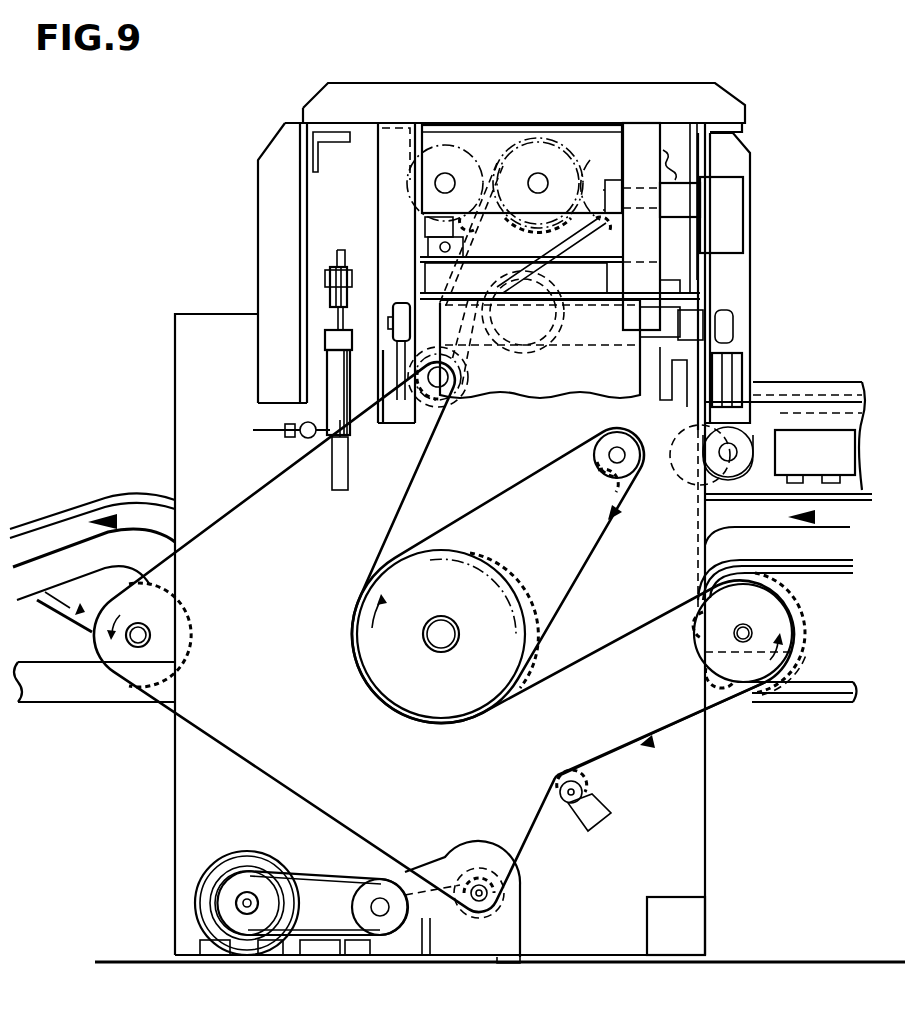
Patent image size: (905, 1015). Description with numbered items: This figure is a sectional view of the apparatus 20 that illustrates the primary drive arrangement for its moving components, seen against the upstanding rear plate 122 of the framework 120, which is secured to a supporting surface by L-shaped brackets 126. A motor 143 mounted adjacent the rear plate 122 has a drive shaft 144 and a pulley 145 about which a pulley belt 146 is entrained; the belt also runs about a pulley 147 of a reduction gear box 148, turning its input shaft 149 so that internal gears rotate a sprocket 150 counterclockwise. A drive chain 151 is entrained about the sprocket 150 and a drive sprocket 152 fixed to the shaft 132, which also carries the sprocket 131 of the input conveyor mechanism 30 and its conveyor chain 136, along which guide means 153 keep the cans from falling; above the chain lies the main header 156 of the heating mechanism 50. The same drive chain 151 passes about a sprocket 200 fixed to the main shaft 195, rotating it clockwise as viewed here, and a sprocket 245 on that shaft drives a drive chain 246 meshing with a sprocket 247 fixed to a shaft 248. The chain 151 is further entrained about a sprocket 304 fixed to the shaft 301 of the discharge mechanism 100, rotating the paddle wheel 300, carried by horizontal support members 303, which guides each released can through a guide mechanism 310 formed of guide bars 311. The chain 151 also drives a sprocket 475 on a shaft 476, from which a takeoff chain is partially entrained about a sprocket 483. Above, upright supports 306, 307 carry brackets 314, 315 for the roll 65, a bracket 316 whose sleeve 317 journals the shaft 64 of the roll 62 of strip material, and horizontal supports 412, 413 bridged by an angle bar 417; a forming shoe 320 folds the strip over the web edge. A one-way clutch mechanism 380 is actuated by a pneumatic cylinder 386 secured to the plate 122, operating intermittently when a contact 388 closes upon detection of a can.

The apparatus 20 is at (203, 198).
The input conveyor mechanism 30 is at (822, 712).
The heating mechanism 50 is at (842, 425).
The roll of strip material 62 is at (627, 142).
The shaft 64 is at (629, 180).
The roll 65 is at (642, 325).
The discharge mechanism 100 is at (135, 714).
The framework 120 is at (688, 837).
The upstanding rear plate 122 is at (277, 676).
The L-shaped brackets 126 is at (694, 932).
The sprocket 131 is at (805, 640).
The shaft 132 is at (730, 630).
The conveyor chain 136 is at (812, 576).
The motor 143 is at (250, 850).
The drive shaft 144 is at (256, 896).
The pulley 145 is at (228, 905).
The pulley belt 146 is at (325, 937).
The pulley 147 is at (385, 938).
The reduction gear box 148 is at (500, 930).
The input shaft 149 is at (380, 900).
The sprocket 150 is at (480, 890).
The drive chain 151 is at (650, 745).
The drive sprocket 152 is at (697, 660).
The guide means 153 is at (803, 538).
The main header 156 is at (846, 460).
The main shaft 195 is at (445, 645).
The sprocket 200 is at (385, 695).
The sprocket 245 is at (442, 607).
The drive chain 246 is at (492, 505).
The sprocket 247 is at (604, 472).
The shaft 248 is at (625, 455).
The paddle wheel 300 is at (75, 612).
The shaft 301 is at (163, 655).
The horizontal support members 303 is at (72, 690).
The sprocket 304 is at (190, 636).
The upright support 306 is at (735, 272).
The upright support 307 is at (387, 197).
The guide mechanism 310 is at (65, 503).
The guide bars 311 is at (135, 525).
The bracket 314 is at (400, 300).
The bracket 315 is at (738, 370).
The bracket 316 is at (728, 225).
The sleeve 317 is at (690, 194).
The forming shoe 320 is at (690, 296).
The clutch mechanism 380 is at (322, 262).
The pneumatic cylinder 386 is at (330, 378).
The contact 388 is at (295, 424).
The horizontal support 412 is at (737, 128).
The horizontal support 413 is at (396, 128).
The angle bar 417 is at (567, 118).
The sprocket 475 is at (432, 425).
The shaft 476 is at (470, 398).
The sprocket 483 is at (540, 353).